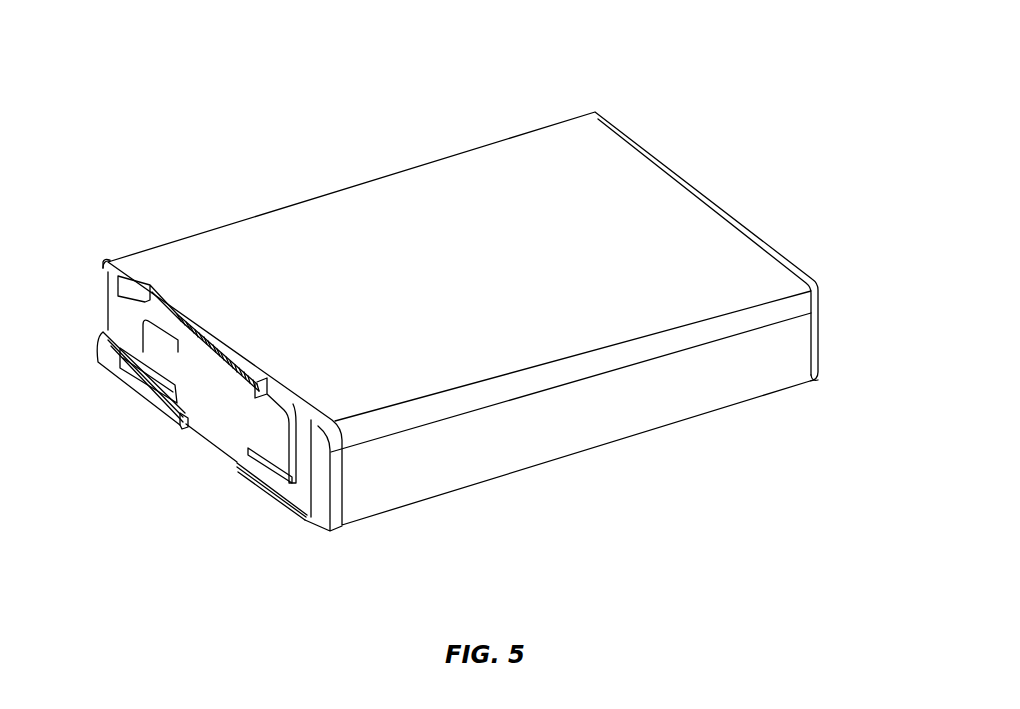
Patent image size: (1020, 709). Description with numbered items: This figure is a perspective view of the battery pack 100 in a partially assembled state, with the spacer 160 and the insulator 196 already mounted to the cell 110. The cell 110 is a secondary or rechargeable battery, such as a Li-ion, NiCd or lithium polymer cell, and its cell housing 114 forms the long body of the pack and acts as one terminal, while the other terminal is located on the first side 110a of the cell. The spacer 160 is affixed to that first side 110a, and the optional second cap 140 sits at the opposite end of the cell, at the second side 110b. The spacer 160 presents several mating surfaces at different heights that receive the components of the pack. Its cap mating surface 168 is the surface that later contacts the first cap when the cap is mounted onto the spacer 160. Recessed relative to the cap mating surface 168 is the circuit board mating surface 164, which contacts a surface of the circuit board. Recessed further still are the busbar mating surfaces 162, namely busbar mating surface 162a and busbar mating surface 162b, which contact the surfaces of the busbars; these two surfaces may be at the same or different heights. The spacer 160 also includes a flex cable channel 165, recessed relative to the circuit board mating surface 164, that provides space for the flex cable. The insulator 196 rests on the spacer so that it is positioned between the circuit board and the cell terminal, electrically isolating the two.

The battery pack 100 is at (584, 77).
The cell 110 is at (405, 160).
The first side of the cell 110a is at (107, 262).
The second side of the cell 110b is at (818, 374).
The cell housing 114 is at (553, 440).
The second cap 140 is at (822, 327).
The spacer 160 is at (345, 490).
The busbar mating surfaces 162 is at (123, 312).
The busbar mating surface 162a is at (162, 298).
The busbar mating surface 162b is at (287, 397).
The circuit board mating surface 164 is at (148, 386).
The flex cable channel 165 is at (183, 427).
The cap mating surface 168 is at (105, 352).
The insulator 196 is at (223, 425).